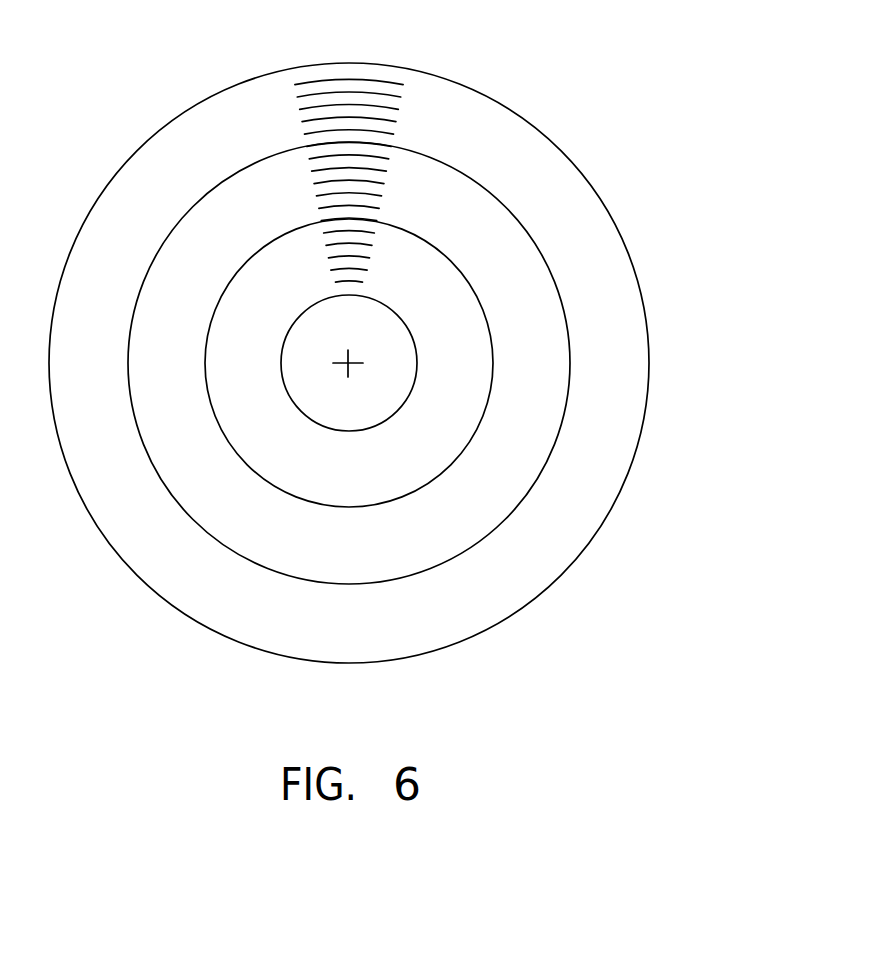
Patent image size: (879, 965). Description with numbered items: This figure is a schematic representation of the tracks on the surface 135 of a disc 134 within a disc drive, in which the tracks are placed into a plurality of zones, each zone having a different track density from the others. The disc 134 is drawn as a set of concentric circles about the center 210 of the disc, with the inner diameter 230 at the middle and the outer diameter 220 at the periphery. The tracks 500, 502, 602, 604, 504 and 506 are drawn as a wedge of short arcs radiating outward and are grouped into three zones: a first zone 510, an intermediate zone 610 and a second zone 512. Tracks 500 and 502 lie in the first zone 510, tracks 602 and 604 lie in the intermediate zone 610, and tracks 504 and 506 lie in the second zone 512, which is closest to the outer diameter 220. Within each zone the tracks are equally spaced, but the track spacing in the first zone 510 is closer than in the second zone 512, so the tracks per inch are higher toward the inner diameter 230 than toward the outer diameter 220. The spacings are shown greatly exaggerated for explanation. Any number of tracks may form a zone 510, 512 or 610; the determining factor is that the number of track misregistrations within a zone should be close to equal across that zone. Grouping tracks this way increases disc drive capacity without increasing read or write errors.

The disc 134 is at (517, 613).
The surface of the disc 135 is at (272, 612).
The center of the disc 210 is at (348, 367).
The outer diameter 220 is at (349, 359).
The inner diameter 230 is at (412, 386).
The track 500 is at (343, 282).
The track 502 is at (343, 270).
The track 504 is at (306, 117).
The track 506 is at (303, 103).
The first zone 510 is at (462, 303).
The second zone 512 is at (428, 432).
The track 602 is at (377, 166).
The track 604 is at (377, 152).
The intermediate zone 610 is at (437, 432).